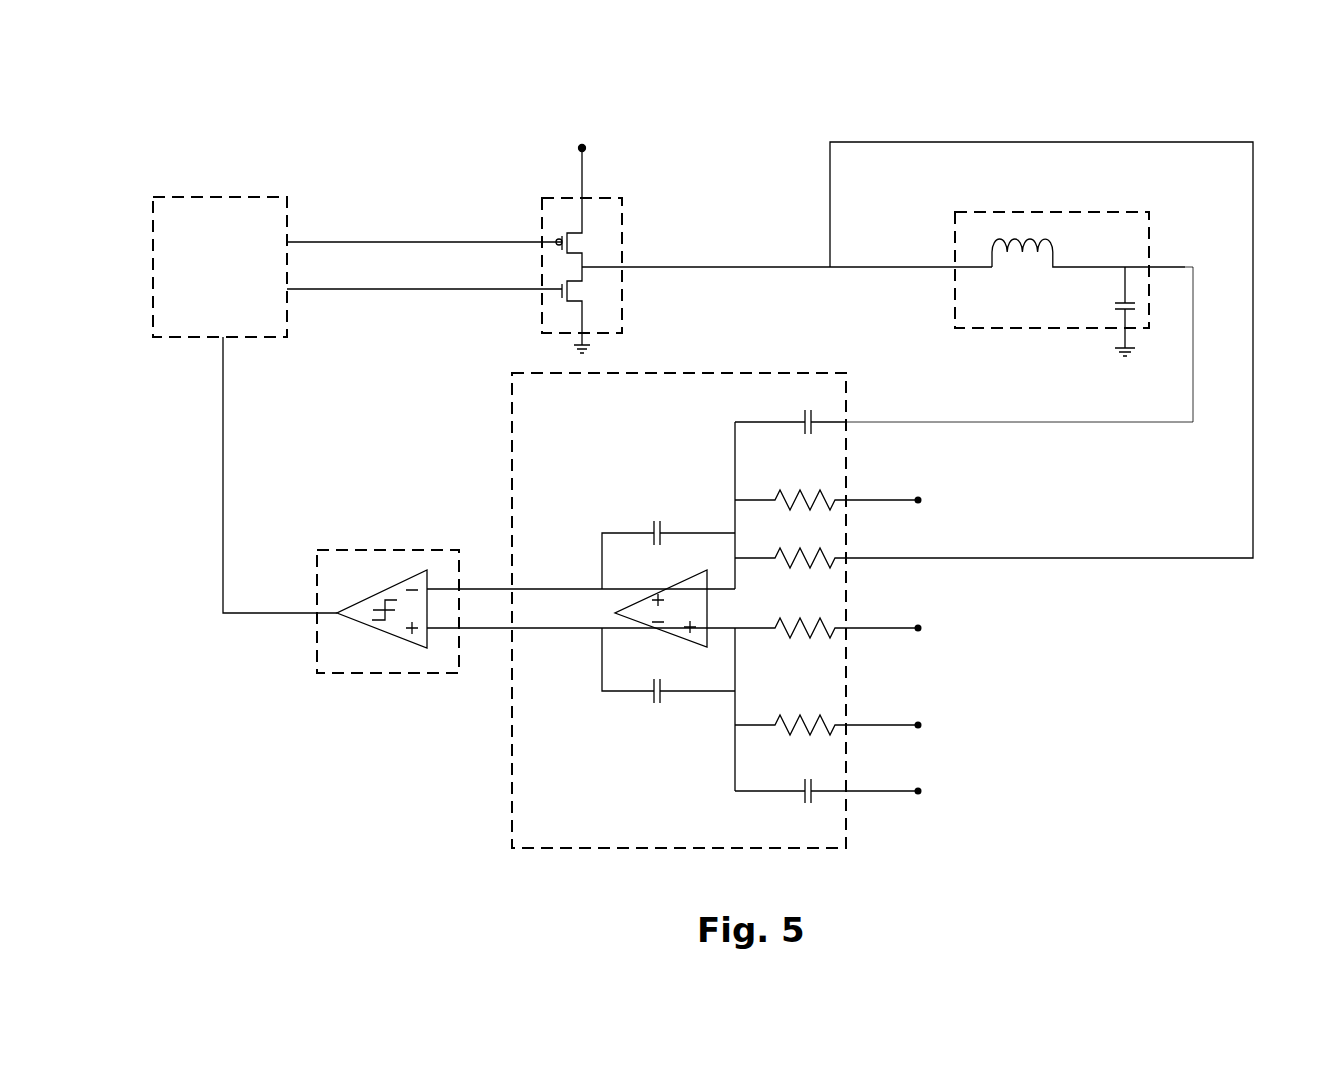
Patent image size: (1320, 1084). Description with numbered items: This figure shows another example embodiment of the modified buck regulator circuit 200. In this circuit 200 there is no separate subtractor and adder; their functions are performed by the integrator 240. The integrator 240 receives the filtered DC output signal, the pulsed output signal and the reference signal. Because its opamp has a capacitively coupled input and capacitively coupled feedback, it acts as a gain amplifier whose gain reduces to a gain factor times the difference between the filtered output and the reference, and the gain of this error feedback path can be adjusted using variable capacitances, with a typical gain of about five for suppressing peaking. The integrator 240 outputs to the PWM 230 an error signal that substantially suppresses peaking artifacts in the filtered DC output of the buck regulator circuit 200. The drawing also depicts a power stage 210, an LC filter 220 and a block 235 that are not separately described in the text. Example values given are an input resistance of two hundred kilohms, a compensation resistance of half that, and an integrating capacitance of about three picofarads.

The modified buck regulator circuit 200 is at (1020, 128).
The power stage 210 is at (543, 212).
The LC filter 220 is at (1052, 211).
The PWM 230 is at (393, 548).
The break-before-make and digital circuits 235 is at (228, 197).
The integrator 240 is at (509, 780).